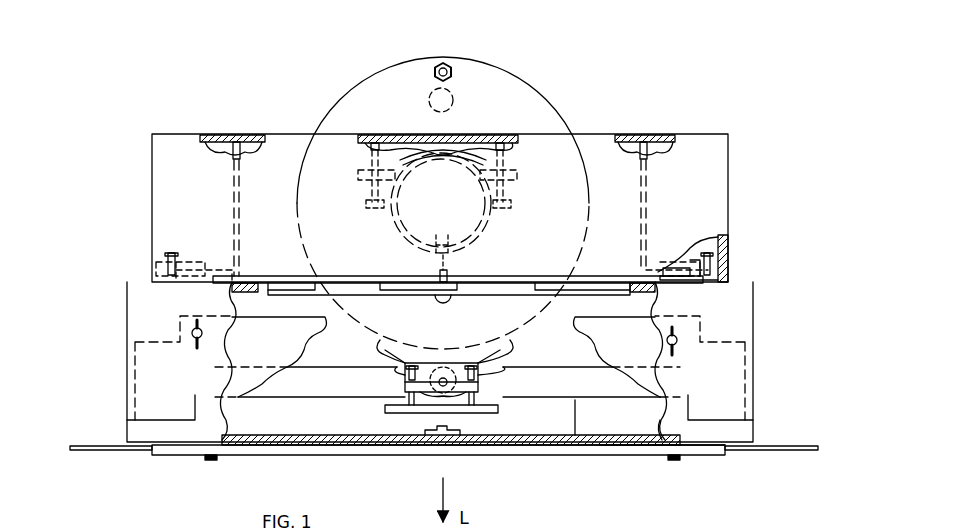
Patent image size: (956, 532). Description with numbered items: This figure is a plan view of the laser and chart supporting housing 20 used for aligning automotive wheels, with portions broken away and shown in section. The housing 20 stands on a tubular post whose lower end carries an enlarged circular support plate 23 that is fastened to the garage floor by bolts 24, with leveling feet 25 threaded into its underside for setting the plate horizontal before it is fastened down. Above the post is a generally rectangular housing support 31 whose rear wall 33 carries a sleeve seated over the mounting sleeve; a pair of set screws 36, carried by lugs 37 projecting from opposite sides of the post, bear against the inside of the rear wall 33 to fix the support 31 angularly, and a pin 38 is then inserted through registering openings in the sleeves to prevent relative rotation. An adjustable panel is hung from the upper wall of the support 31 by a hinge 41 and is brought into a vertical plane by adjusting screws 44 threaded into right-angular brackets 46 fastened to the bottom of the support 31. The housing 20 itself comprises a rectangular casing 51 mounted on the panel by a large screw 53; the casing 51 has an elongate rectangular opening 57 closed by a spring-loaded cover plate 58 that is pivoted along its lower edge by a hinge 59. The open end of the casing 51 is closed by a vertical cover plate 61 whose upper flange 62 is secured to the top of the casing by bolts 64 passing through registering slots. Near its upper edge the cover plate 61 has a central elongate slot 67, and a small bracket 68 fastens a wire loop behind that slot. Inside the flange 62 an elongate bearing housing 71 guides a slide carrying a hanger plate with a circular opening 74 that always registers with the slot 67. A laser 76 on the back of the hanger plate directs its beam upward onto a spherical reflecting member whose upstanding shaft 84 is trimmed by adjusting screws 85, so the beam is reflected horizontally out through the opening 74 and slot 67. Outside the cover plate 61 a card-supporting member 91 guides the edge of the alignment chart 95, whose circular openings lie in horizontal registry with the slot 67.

The housing 20 is at (667, 85).
The circular support plate 23 is at (366, 88).
The bolts 24 is at (448, 64).
The leveling feet 25 is at (455, 97).
The housing support 31 is at (696, 133).
The rear wall 33 is at (476, 133).
The set screws 36 is at (366, 205).
The lugs 37 is at (355, 175).
The pin 38 is at (445, 216).
The hinge 41 is at (698, 255).
The adjusting screws 44 is at (165, 248).
The right-angular brackets 46 is at (222, 133).
The casing 51 is at (757, 336).
The screw 53 is at (453, 297).
The opening 57 is at (250, 278).
The cover plate 58 is at (598, 280).
The hinge 59 is at (515, 288).
The cover plate 61 is at (536, 446).
The flange 62 is at (660, 440).
The bolts 64 is at (194, 342).
The slot 67 is at (632, 448).
The bracket 68 is at (455, 428).
The bearing housing 71 is at (575, 400).
The circular opening 74 is at (440, 415).
The laser 76 is at (447, 362).
The shaft 84 is at (434, 366).
The adjusting screws 85 is at (385, 352).
The card-supporting member 91 is at (293, 457).
The alignment chart 95 is at (113, 452).